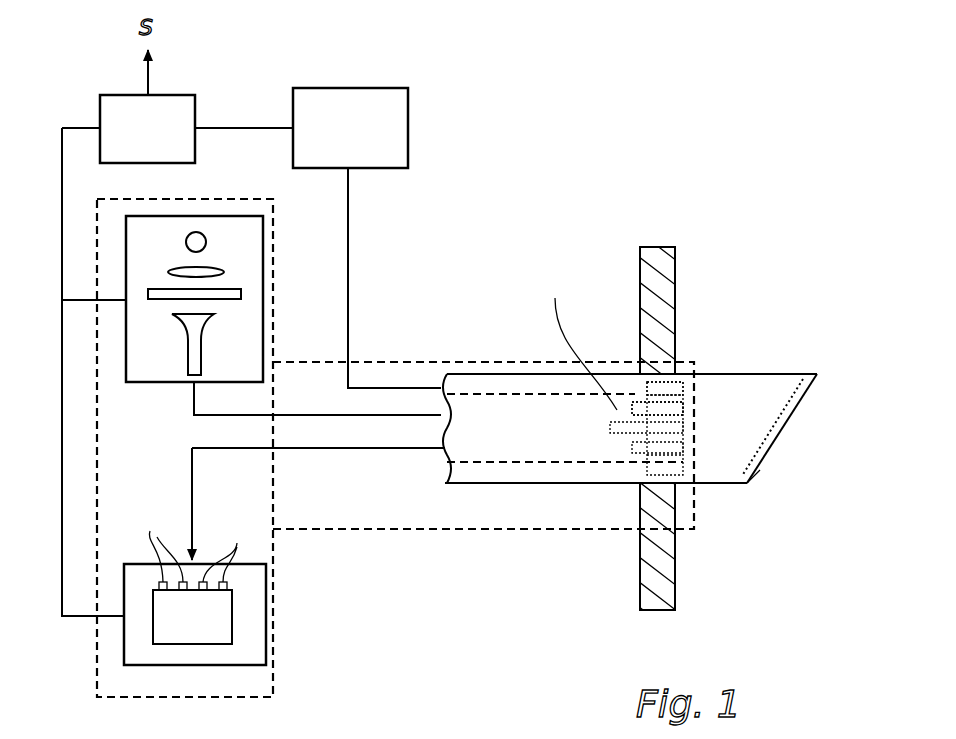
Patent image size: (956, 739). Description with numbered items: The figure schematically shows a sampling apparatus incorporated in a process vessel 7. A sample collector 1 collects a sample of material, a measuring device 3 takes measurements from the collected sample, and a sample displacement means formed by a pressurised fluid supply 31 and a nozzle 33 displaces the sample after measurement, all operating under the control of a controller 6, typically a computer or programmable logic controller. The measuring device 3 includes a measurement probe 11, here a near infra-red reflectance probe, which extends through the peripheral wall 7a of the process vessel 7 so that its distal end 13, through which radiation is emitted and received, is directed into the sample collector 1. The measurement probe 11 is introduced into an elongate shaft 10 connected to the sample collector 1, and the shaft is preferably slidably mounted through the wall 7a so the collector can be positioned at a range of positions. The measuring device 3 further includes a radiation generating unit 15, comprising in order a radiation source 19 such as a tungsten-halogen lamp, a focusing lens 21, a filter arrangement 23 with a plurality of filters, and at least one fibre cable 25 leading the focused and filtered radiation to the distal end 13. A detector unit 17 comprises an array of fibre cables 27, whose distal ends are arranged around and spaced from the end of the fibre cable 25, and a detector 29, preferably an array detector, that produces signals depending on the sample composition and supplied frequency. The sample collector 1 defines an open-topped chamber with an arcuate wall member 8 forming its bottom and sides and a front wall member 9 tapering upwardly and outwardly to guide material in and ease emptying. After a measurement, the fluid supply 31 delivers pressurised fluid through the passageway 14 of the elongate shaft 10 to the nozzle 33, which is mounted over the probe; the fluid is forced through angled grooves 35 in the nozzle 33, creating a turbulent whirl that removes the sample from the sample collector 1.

The sample collector 1 is at (633, 461).
The measuring device 3 is at (298, 553).
The controller 6 is at (200, 92).
The process vessel 7 is at (688, 453).
The peripheral wall 7a is at (660, 592).
The arcuate wall member 8 is at (720, 485).
The front wall member 9 is at (805, 392).
The elongate shaft 10 is at (467, 485).
The measurement probe 11 is at (517, 487).
The distal end 13 is at (748, 484).
The passageway 14 is at (483, 387).
The radiation generating unit 15 is at (117, 277).
The detector unit 17 is at (239, 683).
The radiation source 19 is at (205, 233).
The focusing lens 21 is at (183, 268).
The filter arrangement 23 is at (230, 289).
The fibre cable 25 is at (202, 352).
The fibre cables 27 is at (712, 305).
The detector 29 is at (184, 620).
The pressurised fluid supply 31 is at (408, 118).
The nozzle 33 is at (647, 398).
The grooves 35 is at (668, 395).